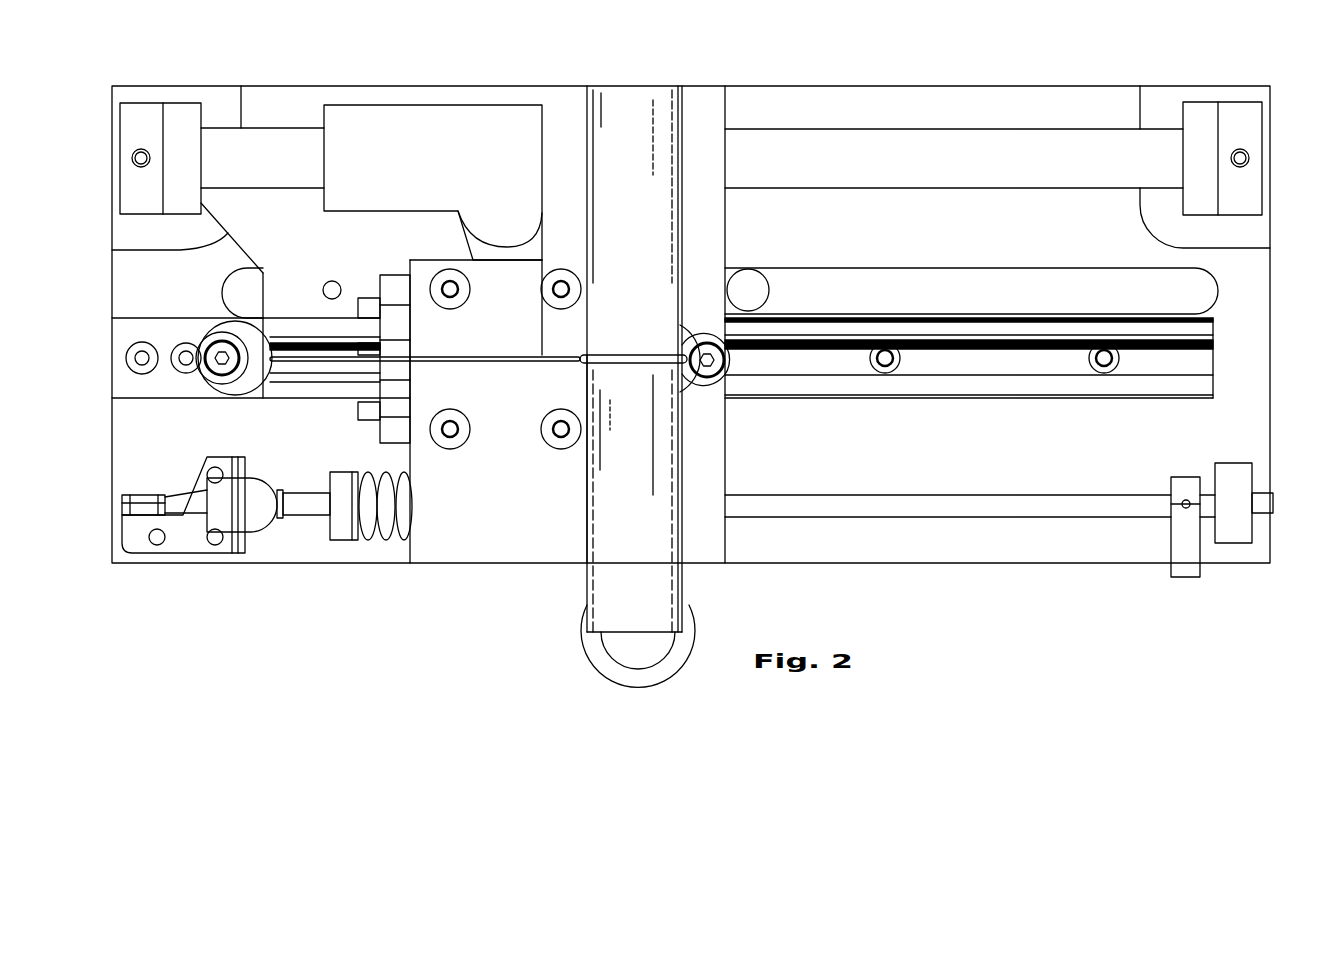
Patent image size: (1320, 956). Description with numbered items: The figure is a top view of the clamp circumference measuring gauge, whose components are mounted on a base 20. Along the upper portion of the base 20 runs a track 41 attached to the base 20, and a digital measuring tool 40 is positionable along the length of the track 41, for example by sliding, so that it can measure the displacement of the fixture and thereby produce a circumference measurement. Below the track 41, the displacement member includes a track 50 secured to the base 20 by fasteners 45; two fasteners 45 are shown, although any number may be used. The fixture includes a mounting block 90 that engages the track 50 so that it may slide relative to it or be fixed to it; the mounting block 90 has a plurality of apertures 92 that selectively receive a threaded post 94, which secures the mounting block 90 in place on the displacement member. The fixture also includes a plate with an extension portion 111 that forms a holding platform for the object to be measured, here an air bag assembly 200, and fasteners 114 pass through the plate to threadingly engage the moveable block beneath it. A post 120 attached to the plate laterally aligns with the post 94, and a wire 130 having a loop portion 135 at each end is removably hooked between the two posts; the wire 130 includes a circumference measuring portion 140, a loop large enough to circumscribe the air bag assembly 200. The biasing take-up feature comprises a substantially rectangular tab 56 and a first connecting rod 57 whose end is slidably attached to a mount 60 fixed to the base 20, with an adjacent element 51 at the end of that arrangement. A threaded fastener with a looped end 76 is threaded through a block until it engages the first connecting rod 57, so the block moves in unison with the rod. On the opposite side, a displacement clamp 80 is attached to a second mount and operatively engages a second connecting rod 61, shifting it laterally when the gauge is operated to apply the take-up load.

The base 20 is at (1250, 390).
The digital measuring tool 40 is at (389, 128).
The track 41 is at (1077, 155).
The fasteners 45 is at (880, 370).
The track 50 is at (1205, 337).
The stop 51 is at (1265, 505).
The substantially rectangular tab 56 is at (1185, 555).
The first connecting rod 57 is at (945, 510).
The mount 60 is at (1233, 483).
The second connecting rod 61 is at (302, 508).
The looped end 76 is at (660, 675).
The displacement clamp 80 is at (215, 512).
The mounting block 90 is at (138, 328).
The apertures 92 is at (182, 370).
The post 94 is at (220, 342).
The extension portion 111 is at (570, 107).
The fasteners 114 is at (542, 284).
The post 120 is at (723, 347).
The wire 130 is at (437, 358).
The loop portion 135 is at (233, 345).
The circumference measuring portion 140 is at (630, 355).
The air bag assembly 200 is at (638, 122).